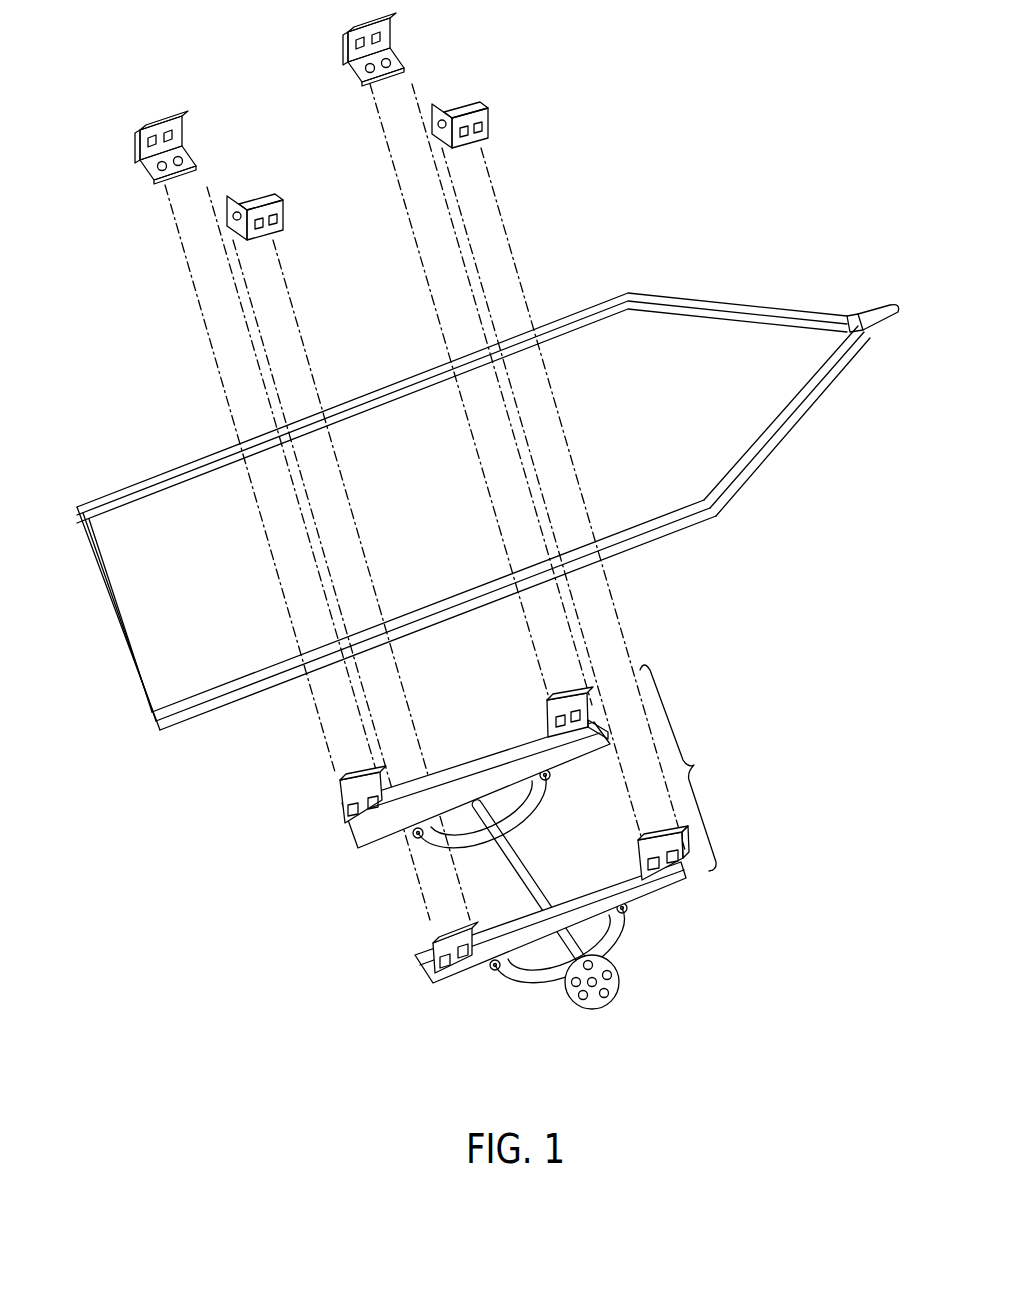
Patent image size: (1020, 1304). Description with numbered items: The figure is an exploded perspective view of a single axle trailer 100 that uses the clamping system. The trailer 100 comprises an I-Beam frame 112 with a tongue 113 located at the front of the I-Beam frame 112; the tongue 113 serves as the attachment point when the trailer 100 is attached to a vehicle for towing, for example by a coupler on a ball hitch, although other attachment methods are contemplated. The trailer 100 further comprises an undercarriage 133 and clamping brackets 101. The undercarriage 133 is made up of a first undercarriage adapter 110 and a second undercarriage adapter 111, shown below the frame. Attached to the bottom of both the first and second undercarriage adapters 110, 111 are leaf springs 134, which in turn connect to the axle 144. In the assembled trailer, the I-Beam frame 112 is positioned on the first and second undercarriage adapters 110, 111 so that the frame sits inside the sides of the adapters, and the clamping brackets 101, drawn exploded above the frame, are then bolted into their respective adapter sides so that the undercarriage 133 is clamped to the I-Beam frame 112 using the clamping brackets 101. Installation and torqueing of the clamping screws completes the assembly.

The trailer 100 is at (809, 134).
The clamping brackets 101 is at (140, 165).
The first undercarriage adapter 110 is at (420, 966).
The second undercarriage adapter 111 is at (338, 832).
The I-Beam frame 112 is at (750, 304).
The tongue 113 is at (874, 305).
The undercarriage 133 is at (606, 815).
The leaf springs 134 is at (540, 790).
The axle 144 is at (612, 946).